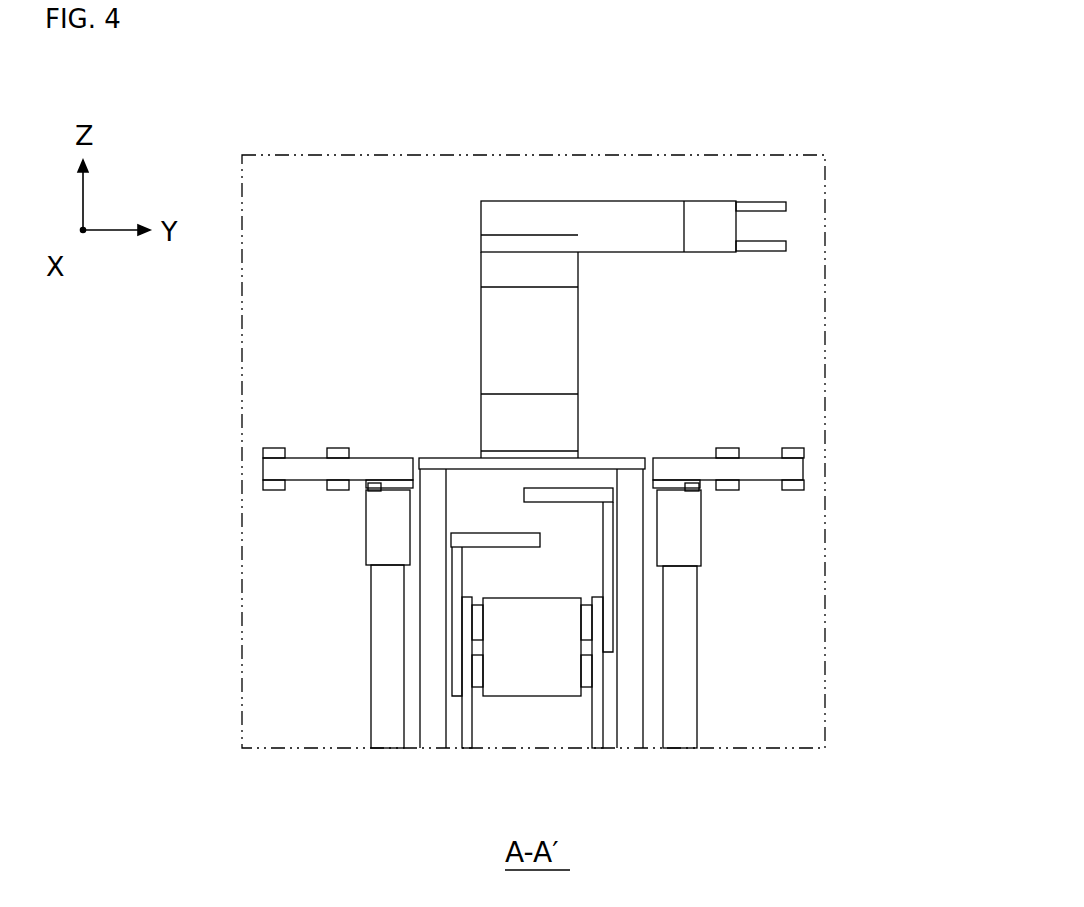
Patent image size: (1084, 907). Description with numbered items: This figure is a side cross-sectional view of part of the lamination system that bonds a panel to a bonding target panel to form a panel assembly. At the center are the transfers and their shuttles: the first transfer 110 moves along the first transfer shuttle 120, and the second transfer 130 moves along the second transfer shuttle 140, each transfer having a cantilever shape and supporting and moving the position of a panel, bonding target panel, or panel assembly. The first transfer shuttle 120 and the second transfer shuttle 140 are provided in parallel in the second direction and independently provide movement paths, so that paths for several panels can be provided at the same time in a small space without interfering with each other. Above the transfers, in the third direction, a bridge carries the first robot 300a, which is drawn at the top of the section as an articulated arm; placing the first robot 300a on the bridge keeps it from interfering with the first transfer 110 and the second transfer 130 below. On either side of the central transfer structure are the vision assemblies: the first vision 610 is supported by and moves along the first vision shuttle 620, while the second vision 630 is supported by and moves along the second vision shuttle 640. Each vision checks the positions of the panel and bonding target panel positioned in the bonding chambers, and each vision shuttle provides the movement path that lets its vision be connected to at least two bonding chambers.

The first robot 300a is at (722, 229).
The first transfer 110 is at (605, 495).
The first transfer shuttle 120 is at (578, 677).
The second transfer 130 is at (468, 540).
The second transfer shuttle 140 is at (483, 672).
The first vision 610 is at (787, 470).
The first vision shuttle 620 is at (689, 511).
The second vision 630 is at (282, 468).
The second vision shuttle 640 is at (383, 519).